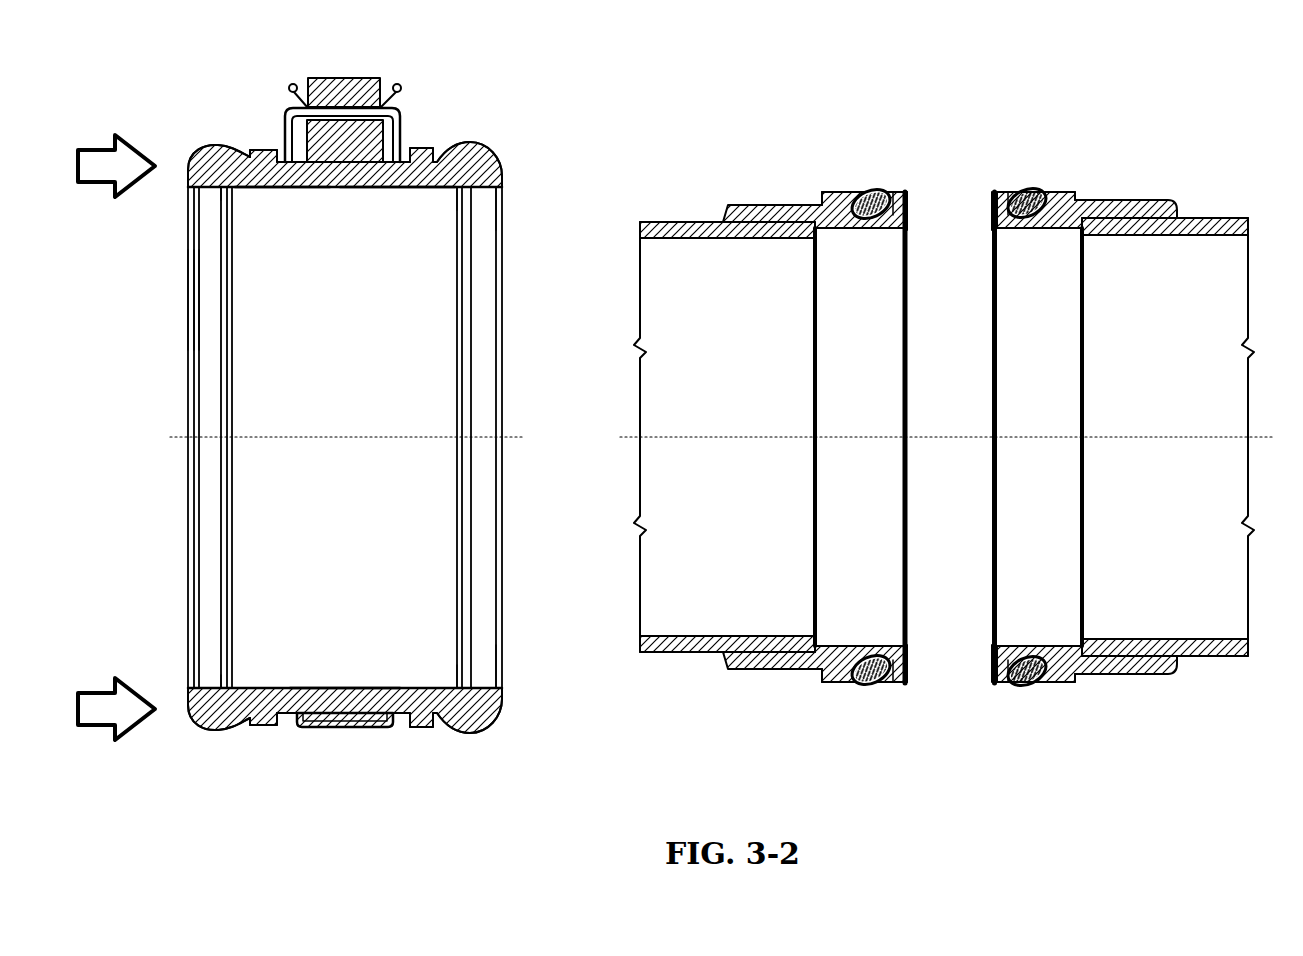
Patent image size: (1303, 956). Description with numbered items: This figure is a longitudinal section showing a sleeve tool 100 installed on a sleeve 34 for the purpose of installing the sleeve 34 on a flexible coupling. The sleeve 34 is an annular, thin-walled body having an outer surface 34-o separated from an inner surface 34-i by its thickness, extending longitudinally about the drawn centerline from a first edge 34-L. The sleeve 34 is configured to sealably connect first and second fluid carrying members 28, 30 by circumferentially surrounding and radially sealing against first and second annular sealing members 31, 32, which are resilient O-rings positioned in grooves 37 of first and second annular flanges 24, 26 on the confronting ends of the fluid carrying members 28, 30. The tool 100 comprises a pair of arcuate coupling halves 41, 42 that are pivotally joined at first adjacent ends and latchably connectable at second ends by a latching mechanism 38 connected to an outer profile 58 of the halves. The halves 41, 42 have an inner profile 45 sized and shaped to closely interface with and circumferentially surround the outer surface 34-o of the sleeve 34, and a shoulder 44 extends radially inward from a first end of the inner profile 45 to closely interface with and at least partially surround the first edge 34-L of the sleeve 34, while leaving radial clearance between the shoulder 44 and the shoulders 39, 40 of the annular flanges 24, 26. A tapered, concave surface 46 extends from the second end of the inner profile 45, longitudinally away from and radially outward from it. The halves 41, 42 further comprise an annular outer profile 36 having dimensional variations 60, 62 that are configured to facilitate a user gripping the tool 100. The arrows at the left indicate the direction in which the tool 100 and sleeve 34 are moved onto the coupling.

The tool 100 is at (183, 128).
The sleeve 34 is at (352, 342).
The inner surface 34-i is at (280, 190).
The outer surface 34-o is at (410, 190).
The first edge 34-L is at (215, 305).
The annular outer profile 36 is at (515, 150).
The latching mechanism 38 is at (358, 70).
The arcuate coupling half 41 is at (495, 722).
The arcuate coupling half 42 is at (478, 148).
The shoulder 44 is at (226, 196).
The inner profile 45 is at (446, 188).
The tapered surface 46 is at (490, 205).
The outer profile 58 is at (357, 153).
The dimensional variation 60 is at (265, 147).
The dimensional variation 62 is at (420, 160).
The first annular flange 24 is at (745, 205).
The second annular flange 26 is at (1160, 200).
The first fluid carrying member 28 is at (668, 222).
The second fluid carrying member 30 is at (1205, 218).
The first annular sealing member 31 is at (870, 190).
The second annular sealing member 32 is at (1030, 190).
The groove 37 is at (895, 192).
The shoulder 39 is at (840, 192).
The shoulder 40 is at (908, 192).